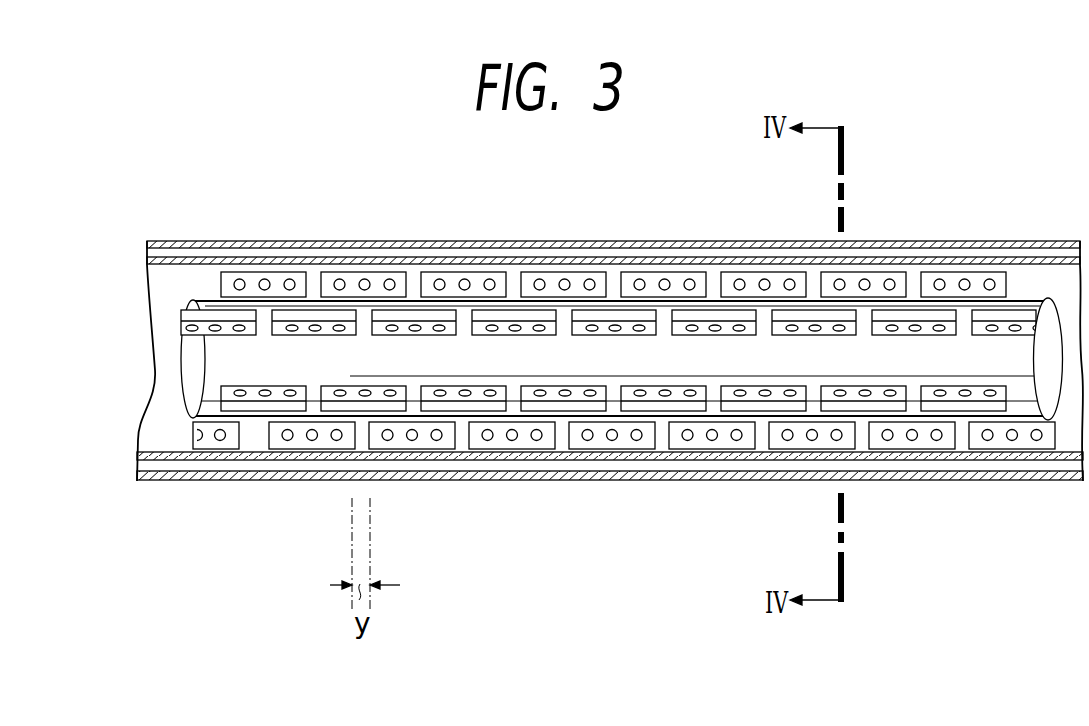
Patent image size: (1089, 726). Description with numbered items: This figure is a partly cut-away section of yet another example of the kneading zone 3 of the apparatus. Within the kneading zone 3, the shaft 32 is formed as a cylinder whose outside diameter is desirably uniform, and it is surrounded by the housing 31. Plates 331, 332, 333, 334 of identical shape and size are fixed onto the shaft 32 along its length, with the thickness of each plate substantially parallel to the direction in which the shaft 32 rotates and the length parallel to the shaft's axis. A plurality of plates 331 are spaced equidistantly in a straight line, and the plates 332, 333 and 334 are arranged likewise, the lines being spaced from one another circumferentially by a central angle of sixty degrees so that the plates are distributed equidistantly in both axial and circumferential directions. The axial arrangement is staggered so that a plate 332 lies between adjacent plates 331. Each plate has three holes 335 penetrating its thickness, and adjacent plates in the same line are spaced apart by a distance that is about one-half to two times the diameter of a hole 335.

The kneading zone 3 is at (610, 341).
The housing 31 is at (655, 252).
The shaft 32 is at (513, 308).
The plates 331 is at (277, 278).
The plates 332 is at (415, 328).
The plates 333 is at (564, 404).
The plates 334 is at (701, 440).
The holes 335 is at (366, 285).